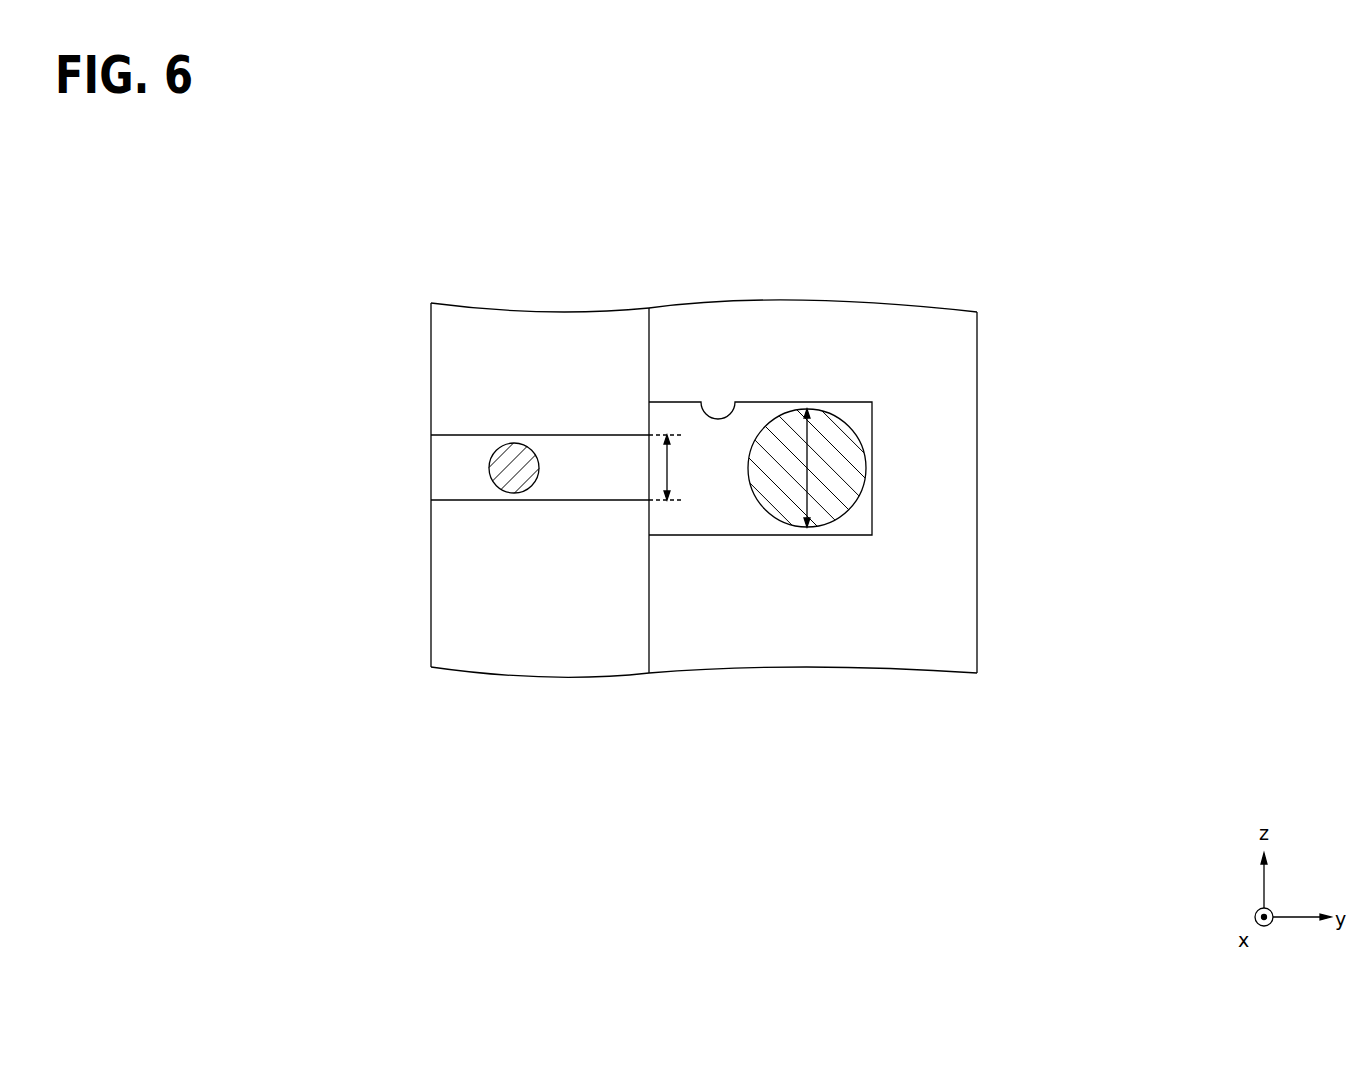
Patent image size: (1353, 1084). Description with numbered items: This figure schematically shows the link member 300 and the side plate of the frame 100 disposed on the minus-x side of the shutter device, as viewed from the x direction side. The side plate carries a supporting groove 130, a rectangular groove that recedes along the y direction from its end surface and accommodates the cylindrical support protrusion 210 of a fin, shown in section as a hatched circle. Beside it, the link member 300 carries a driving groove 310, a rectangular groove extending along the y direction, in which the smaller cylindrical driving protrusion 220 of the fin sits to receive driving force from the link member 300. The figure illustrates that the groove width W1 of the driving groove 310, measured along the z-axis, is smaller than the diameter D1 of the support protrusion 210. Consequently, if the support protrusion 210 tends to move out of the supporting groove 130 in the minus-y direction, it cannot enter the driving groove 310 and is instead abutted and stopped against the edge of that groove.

The frame 100 is at (955, 352).
The supporting groove 130 is at (720, 417).
The support protrusion 210 is at (845, 472).
The driving protrusion 220 is at (503, 468).
The link member 300 is at (430, 342).
The driving groove 310 is at (593, 499).
The groove width W1 is at (668, 462).
The diameter D1 is at (805, 478).